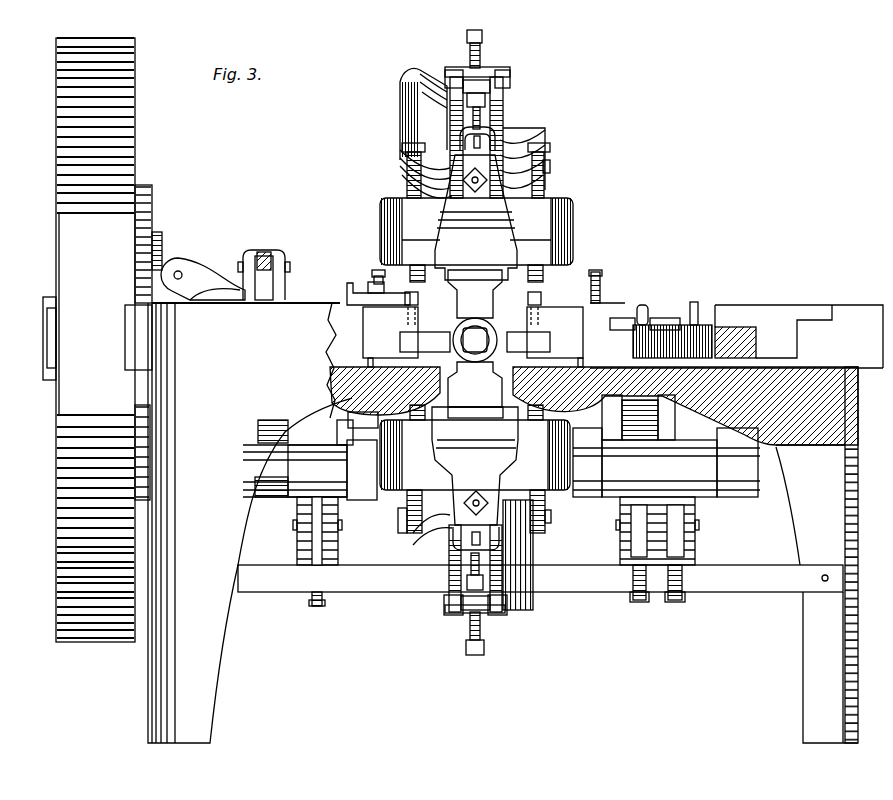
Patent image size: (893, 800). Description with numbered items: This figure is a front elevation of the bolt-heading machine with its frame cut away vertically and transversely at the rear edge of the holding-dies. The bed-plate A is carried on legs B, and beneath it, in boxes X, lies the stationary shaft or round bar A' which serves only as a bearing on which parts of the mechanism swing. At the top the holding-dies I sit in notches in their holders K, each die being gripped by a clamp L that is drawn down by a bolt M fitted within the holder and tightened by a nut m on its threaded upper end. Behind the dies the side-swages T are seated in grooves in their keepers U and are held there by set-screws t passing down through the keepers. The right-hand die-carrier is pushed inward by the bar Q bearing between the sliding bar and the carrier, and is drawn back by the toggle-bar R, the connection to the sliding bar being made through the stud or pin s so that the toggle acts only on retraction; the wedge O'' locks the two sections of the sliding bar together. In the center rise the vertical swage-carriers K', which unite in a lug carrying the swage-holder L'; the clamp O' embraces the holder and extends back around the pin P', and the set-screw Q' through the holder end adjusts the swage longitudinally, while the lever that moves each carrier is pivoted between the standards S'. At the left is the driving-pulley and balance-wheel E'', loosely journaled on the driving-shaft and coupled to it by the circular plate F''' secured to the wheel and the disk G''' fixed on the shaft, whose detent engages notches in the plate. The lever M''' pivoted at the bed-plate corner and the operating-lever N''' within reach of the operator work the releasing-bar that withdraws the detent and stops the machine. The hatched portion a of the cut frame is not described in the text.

The driving-pulley and balance-wheel E'' is at (89, 340).
The circular metal plate F''' is at (149, 333).
The metal disk G''' is at (167, 251).
The lever M''' is at (203, 272).
The operating-lever N''' is at (264, 265).
The holder K is at (504, 337).
The bed-plate A is at (517, 523).
The frame section a is at (385, 391).
The legs B is at (503, 523).
The shaft or round bar A' is at (806, 458).
The clamp L is at (378, 291).
The nut m is at (388, 285).
The bolt M is at (481, 280).
The set-screw t is at (473, 306).
The keeper U is at (473, 337).
The side-swage T is at (475, 343).
The holding-dies I is at (473, 338).
The set-screw Q' is at (471, 342).
The swage-holder L' is at (478, 341).
The toggle-bar R is at (462, 340).
The standards S' is at (470, 339).
The vertical swage-carriers K' is at (476, 344).
The pin P' is at (476, 357).
The clamp O' is at (475, 340).
The wedge O'' is at (476, 509).
The boxes X is at (501, 447).
The bar Q is at (661, 322).
The stud or pin s is at (698, 305).